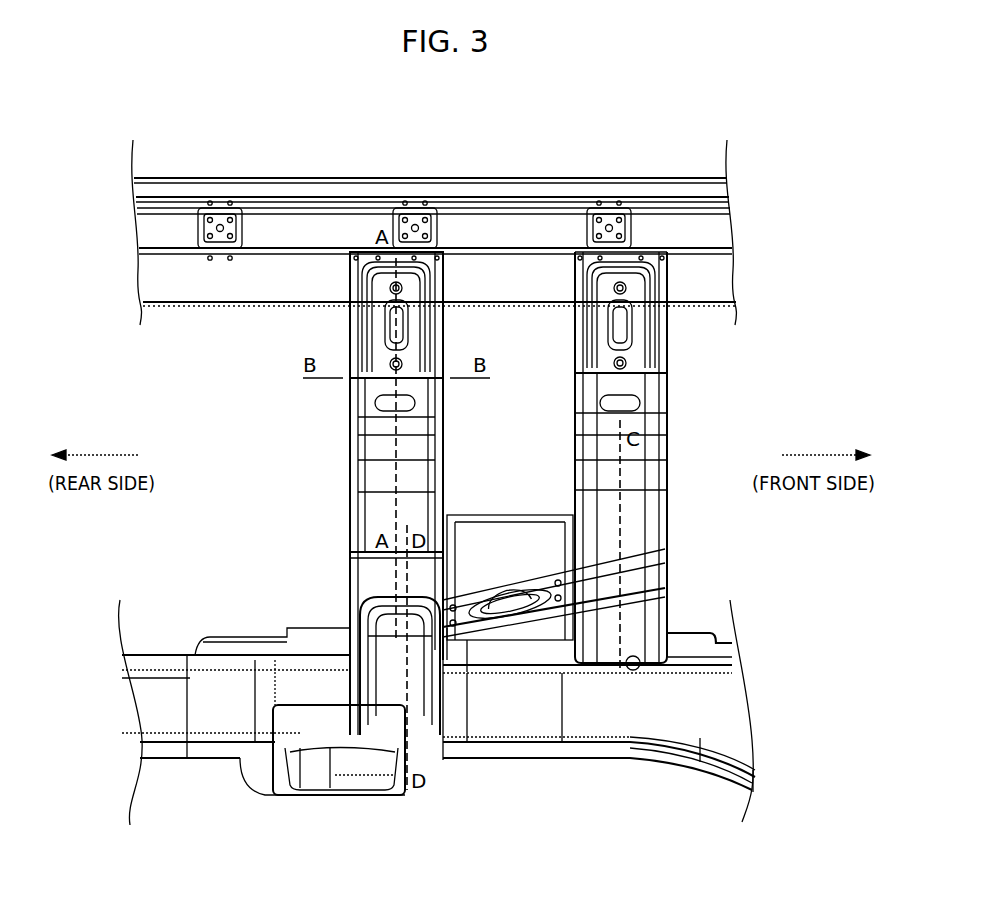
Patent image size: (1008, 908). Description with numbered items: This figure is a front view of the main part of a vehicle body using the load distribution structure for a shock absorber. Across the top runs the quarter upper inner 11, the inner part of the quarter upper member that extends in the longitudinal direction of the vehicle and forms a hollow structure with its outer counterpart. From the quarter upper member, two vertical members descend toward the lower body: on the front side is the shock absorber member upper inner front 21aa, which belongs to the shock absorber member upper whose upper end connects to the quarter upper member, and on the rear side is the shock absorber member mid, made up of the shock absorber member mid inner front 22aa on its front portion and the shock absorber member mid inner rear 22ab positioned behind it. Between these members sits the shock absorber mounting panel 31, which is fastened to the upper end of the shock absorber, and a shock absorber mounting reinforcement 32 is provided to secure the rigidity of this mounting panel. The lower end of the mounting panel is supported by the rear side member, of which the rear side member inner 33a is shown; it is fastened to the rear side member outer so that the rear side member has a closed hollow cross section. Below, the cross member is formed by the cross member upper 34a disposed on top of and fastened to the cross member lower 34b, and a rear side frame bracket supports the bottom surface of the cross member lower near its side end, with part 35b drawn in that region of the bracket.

The quarter upper inner 11 is at (525, 230).
The shock absorber member upper inner front 21aa is at (660, 328).
The shock absorber member mid inner front 22aa is at (372, 305).
The shock absorber member mid inner rear 22ab is at (380, 470).
The shock absorber mounting panel 31 is at (483, 525).
The shock absorber mounting reinforcement 32 is at (505, 592).
The rear side member inner 33a is at (672, 712).
The cross member upper 34a is at (462, 628).
The cross member lower 34b is at (455, 760).
The lower reinforcement box 35b is at (310, 765).